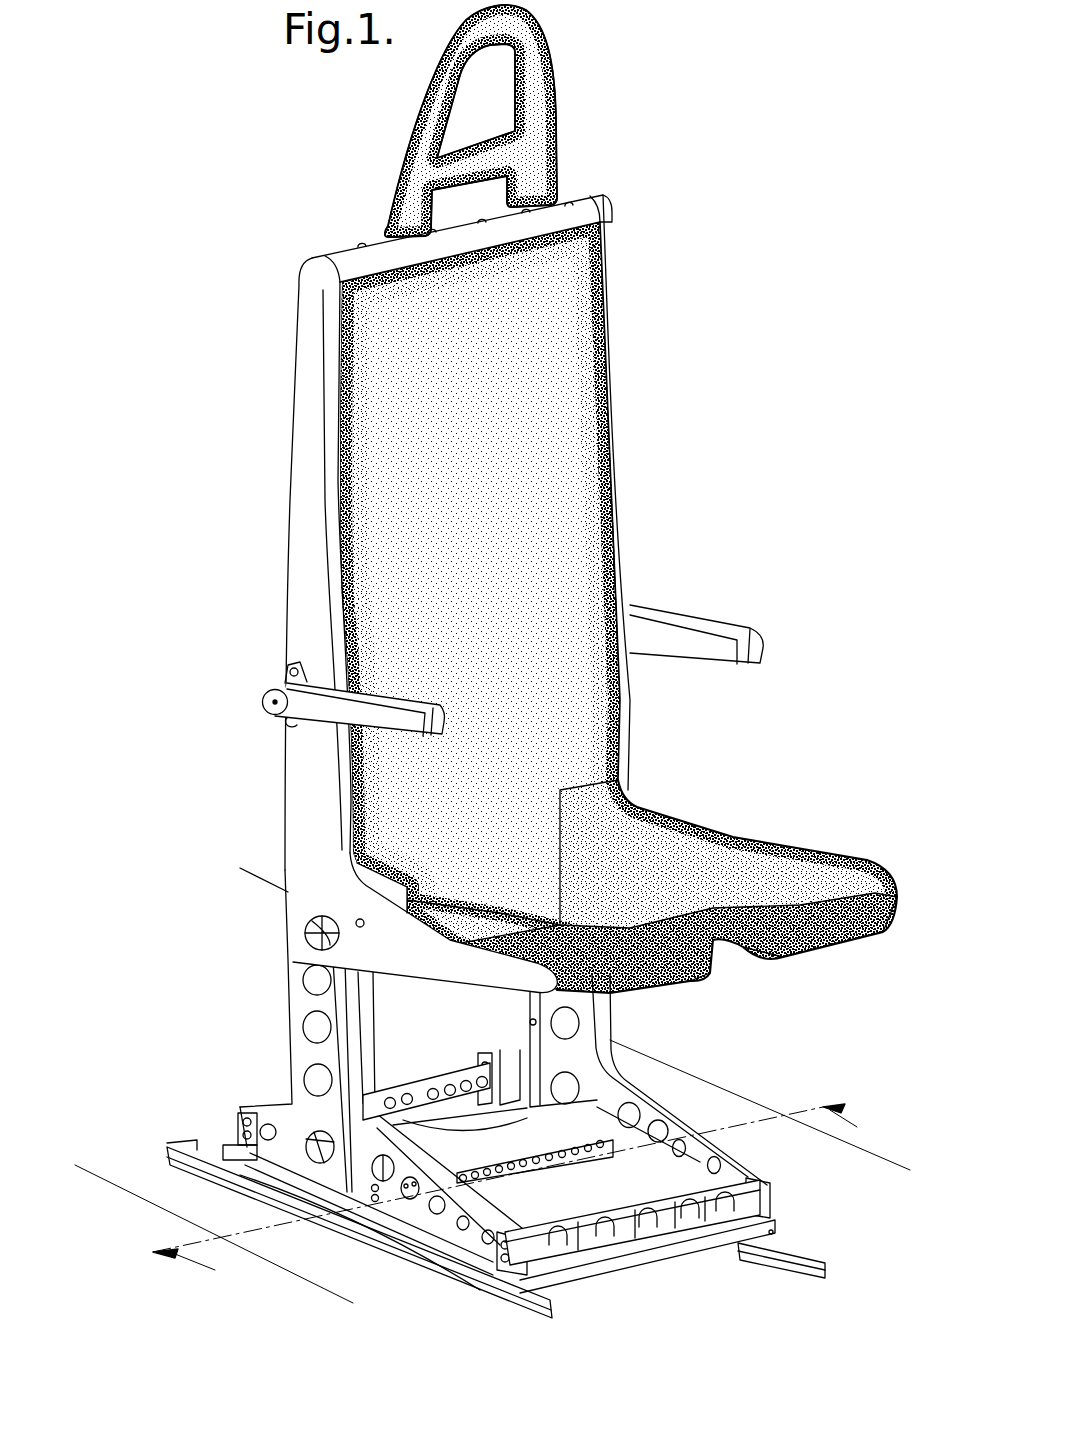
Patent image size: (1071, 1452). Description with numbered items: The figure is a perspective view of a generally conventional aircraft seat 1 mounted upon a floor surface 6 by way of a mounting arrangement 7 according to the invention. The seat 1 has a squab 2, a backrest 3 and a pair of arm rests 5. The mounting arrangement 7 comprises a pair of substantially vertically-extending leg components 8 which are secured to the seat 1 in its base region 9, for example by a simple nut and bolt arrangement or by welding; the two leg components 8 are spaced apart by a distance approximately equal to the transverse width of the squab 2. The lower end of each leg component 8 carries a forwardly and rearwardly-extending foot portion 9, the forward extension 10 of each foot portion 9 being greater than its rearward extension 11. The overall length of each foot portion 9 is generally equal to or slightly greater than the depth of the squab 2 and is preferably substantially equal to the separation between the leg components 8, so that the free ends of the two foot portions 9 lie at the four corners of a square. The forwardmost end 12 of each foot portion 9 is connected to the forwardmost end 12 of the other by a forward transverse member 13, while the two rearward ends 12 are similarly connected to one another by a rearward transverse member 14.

The aircraft seat 1 is at (637, 442).
The squab 2 is at (760, 857).
The backrest 3 is at (573, 370).
The arm rests 5 is at (330, 683).
The floor surface 6 is at (735, 1112).
The mounting arrangement 7 is at (238, 1032).
The leg components 8 is at (303, 1003).
The foot portion 9 is at (290, 1143).
The forward extension 10 is at (433, 1220).
The rearward extension 11 is at (275, 1097).
The forwardmost end 12 is at (240, 1117).
The forward transverse member 13 is at (690, 1193).
The rearward transverse member 14 is at (433, 1073).